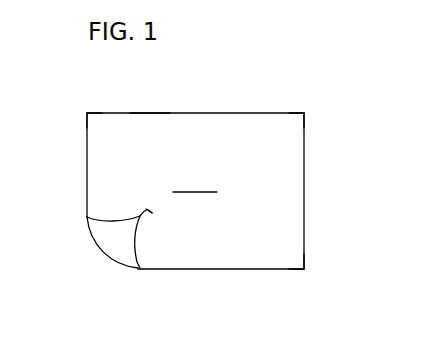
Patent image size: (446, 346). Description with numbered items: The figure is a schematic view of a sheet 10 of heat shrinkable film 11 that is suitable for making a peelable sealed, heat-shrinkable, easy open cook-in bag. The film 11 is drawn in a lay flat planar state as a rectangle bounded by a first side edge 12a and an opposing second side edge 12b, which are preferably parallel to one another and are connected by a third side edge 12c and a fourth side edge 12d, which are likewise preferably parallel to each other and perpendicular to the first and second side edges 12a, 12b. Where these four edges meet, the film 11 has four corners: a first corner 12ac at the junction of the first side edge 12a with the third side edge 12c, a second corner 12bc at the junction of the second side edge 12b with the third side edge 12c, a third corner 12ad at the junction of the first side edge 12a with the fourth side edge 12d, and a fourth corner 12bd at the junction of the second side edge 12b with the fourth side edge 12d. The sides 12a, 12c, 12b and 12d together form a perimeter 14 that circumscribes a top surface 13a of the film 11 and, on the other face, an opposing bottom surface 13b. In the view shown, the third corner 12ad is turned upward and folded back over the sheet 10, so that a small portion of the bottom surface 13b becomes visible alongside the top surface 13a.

The sheet 10 is at (84, 271).
The heat shrinkable film 11 is at (283, 145).
The first side edge 12a is at (87, 185).
The second side edge 12b is at (305, 238).
The third side edge 12c is at (249, 113).
The fourth side edge 12d is at (220, 270).
The first corner 12ac is at (86, 113).
The second corner 12bc is at (304, 113).
The fourth corner 12bd is at (305, 270).
The third corner 12ad is at (152, 212).
The top surface 13a is at (195, 182).
The bottom surface 13b is at (118, 245).
The perimeter 14 is at (150, 113).